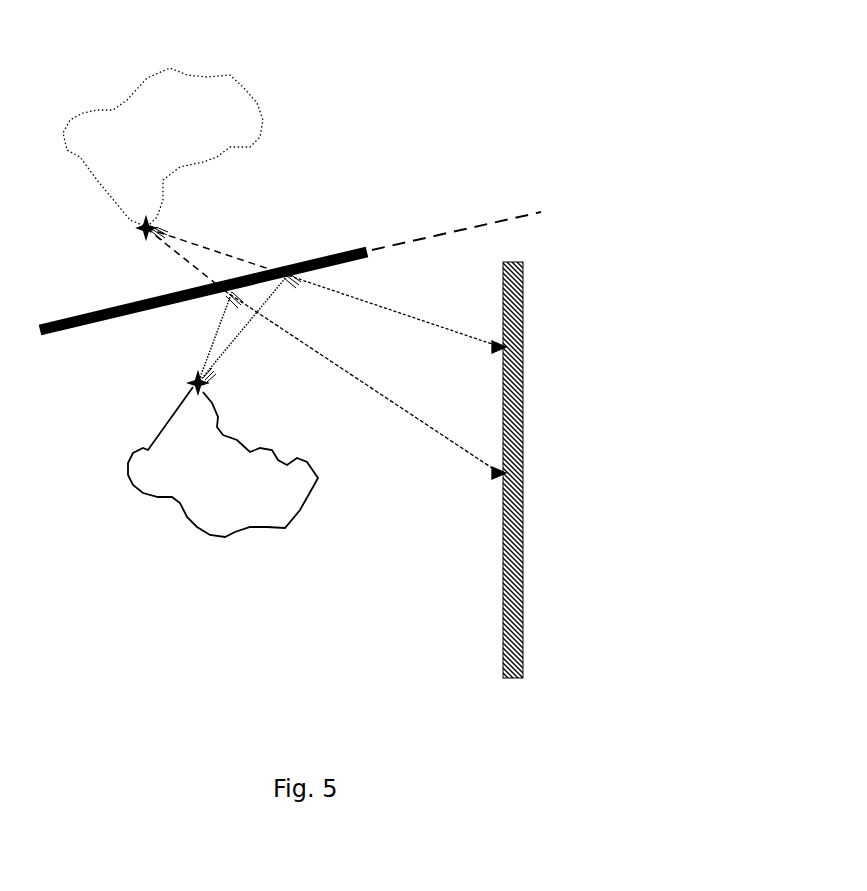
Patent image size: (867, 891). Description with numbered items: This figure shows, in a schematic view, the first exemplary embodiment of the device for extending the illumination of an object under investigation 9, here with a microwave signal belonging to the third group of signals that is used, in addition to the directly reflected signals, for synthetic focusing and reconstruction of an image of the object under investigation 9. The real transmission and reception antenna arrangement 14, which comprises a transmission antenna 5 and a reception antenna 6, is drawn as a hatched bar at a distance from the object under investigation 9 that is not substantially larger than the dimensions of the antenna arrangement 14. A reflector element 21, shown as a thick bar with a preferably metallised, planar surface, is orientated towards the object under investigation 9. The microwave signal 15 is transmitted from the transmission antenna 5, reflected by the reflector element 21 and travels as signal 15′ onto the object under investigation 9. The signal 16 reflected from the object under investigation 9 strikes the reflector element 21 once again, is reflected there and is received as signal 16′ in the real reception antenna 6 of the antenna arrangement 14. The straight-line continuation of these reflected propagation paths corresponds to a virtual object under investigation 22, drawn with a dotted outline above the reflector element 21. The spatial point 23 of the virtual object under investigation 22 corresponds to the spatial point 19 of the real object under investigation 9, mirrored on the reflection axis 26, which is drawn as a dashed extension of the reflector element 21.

The transmission antenna 5 is at (500, 340).
The reception antenna 6 is at (497, 477).
The object under investigation 9 is at (188, 502).
The antenna arrangement 14 is at (524, 287).
The microwave signal 15 is at (418, 317).
The reflected transmitted signal 15′ is at (233, 256).
The reflected microwave signal 16 is at (192, 262).
The received signal 16′ is at (440, 440).
The spatial point of the real object 19 is at (192, 384).
The reflector element 21 is at (76, 318).
The virtual object under investigation 22 is at (130, 93).
The spatial point of the virtual object 23 is at (140, 228).
The reflection axis 26 is at (501, 222).